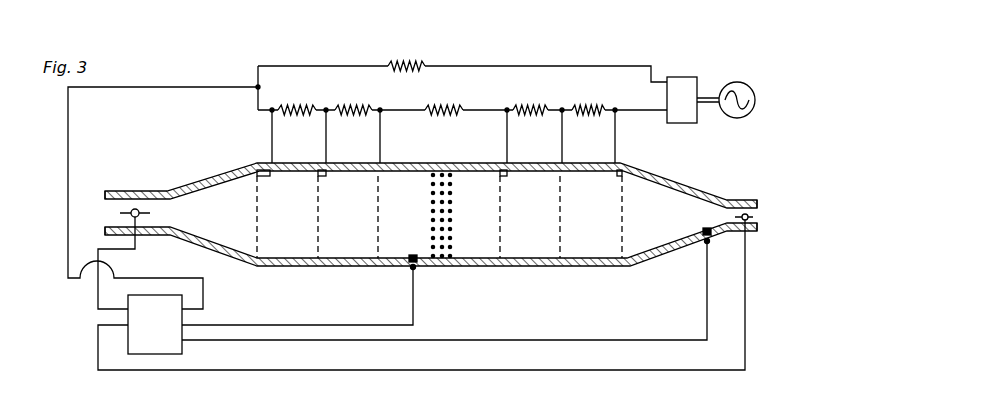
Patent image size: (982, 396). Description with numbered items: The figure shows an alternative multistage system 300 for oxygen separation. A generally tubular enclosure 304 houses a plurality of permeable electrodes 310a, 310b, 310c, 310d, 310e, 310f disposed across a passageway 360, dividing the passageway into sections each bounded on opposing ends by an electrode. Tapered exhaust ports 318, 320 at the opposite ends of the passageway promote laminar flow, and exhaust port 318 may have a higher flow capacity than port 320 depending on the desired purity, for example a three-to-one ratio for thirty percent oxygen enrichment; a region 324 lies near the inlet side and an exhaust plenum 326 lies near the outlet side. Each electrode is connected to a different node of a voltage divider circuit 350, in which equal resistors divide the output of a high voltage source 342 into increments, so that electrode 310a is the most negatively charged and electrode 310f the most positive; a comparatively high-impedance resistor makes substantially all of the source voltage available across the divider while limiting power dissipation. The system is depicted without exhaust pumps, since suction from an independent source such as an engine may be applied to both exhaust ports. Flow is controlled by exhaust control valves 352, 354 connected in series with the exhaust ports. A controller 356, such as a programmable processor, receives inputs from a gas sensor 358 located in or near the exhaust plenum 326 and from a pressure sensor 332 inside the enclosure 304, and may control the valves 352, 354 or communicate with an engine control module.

The system for oxygen separation 300 is at (228, 62).
The tubular enclosure 304 is at (657, 177).
The permeable electrode 310a is at (247, 238).
The permeable electrode 310b is at (318, 237).
The permeable electrode 310c is at (378, 240).
The permeable electrode 310d is at (498, 243).
The permeable electrode 310e is at (562, 240).
The permeable electrode 310f is at (620, 238).
The tapered exhaust port 318 is at (105, 202).
The tapered exhaust port 320 is at (757, 204).
The inlet chamber 324 is at (201, 213).
The exhaust plenum 326 is at (657, 213).
The pressure sensor 332 is at (418, 253).
The high voltage source 342 is at (692, 75).
The voltage divider circuit 350 is at (357, 63).
The exhaust control valve 352 is at (138, 200).
The exhaust control valve 354 is at (757, 217).
The controller 356 is at (155, 324).
The gas sensor 358 is at (707, 232).
The passageway 360 is at (405, 193).